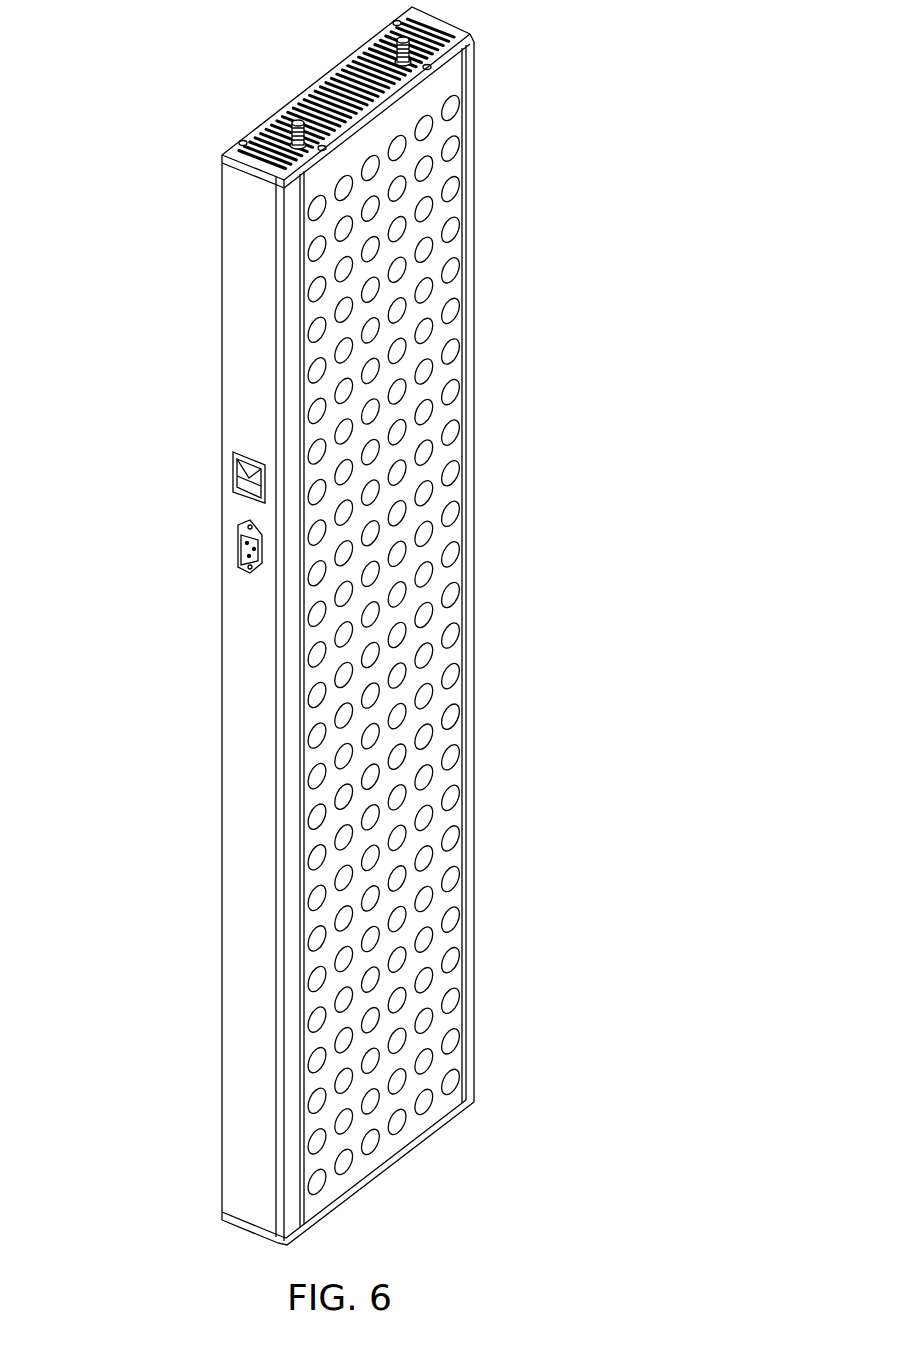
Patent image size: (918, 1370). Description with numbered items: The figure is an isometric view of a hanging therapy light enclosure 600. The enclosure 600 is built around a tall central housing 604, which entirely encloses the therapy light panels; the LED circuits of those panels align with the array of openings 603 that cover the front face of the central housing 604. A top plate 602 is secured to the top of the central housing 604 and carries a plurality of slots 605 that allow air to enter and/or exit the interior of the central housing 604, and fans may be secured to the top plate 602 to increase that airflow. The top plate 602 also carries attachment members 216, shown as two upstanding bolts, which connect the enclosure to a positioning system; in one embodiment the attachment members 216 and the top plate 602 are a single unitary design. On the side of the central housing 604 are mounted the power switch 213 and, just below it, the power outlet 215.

The hanging therapy light enclosure 600 is at (576, 245).
The top plate 602 is at (248, 140).
The openings 603 is at (449, 392).
The central housing 604 is at (243, 333).
The slots 605 is at (340, 82).
The attachment members 216 is at (288, 140).
The power switch 213 is at (232, 456).
The power outlet 215 is at (237, 540).